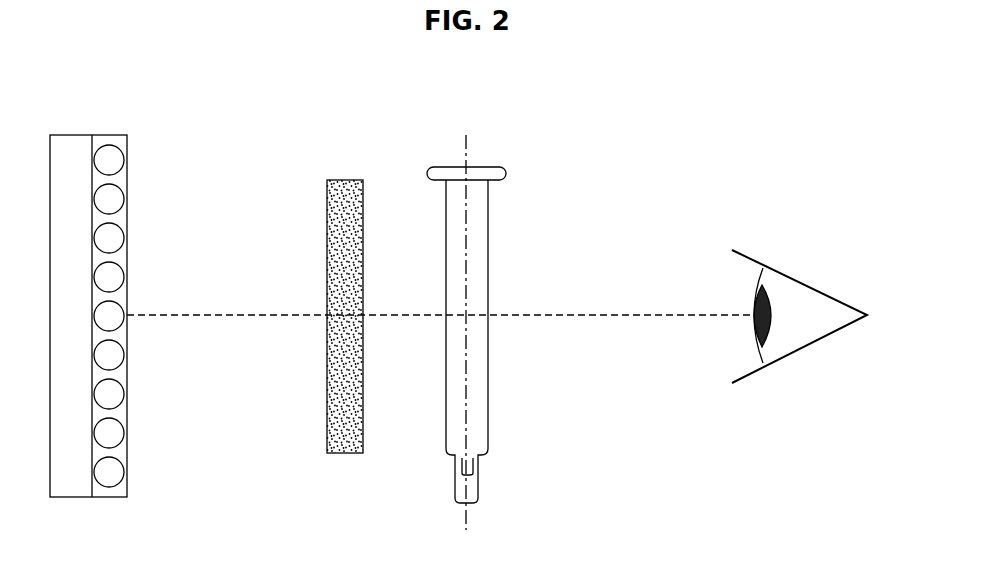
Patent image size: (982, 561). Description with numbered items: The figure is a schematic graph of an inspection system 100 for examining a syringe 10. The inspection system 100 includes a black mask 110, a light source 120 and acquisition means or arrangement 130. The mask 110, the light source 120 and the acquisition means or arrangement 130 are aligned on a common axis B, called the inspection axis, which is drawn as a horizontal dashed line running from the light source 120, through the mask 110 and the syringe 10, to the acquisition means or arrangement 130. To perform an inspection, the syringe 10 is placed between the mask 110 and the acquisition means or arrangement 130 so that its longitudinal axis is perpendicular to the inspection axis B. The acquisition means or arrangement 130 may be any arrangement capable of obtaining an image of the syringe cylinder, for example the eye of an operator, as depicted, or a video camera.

The inspection system 100 is at (222, 92).
The light source 120 is at (128, 258).
The black mask 110 is at (326, 258).
The syringe 10 is at (490, 257).
The inspection axis B is at (607, 314).
The acquisition means or arrangement 130 is at (818, 257).